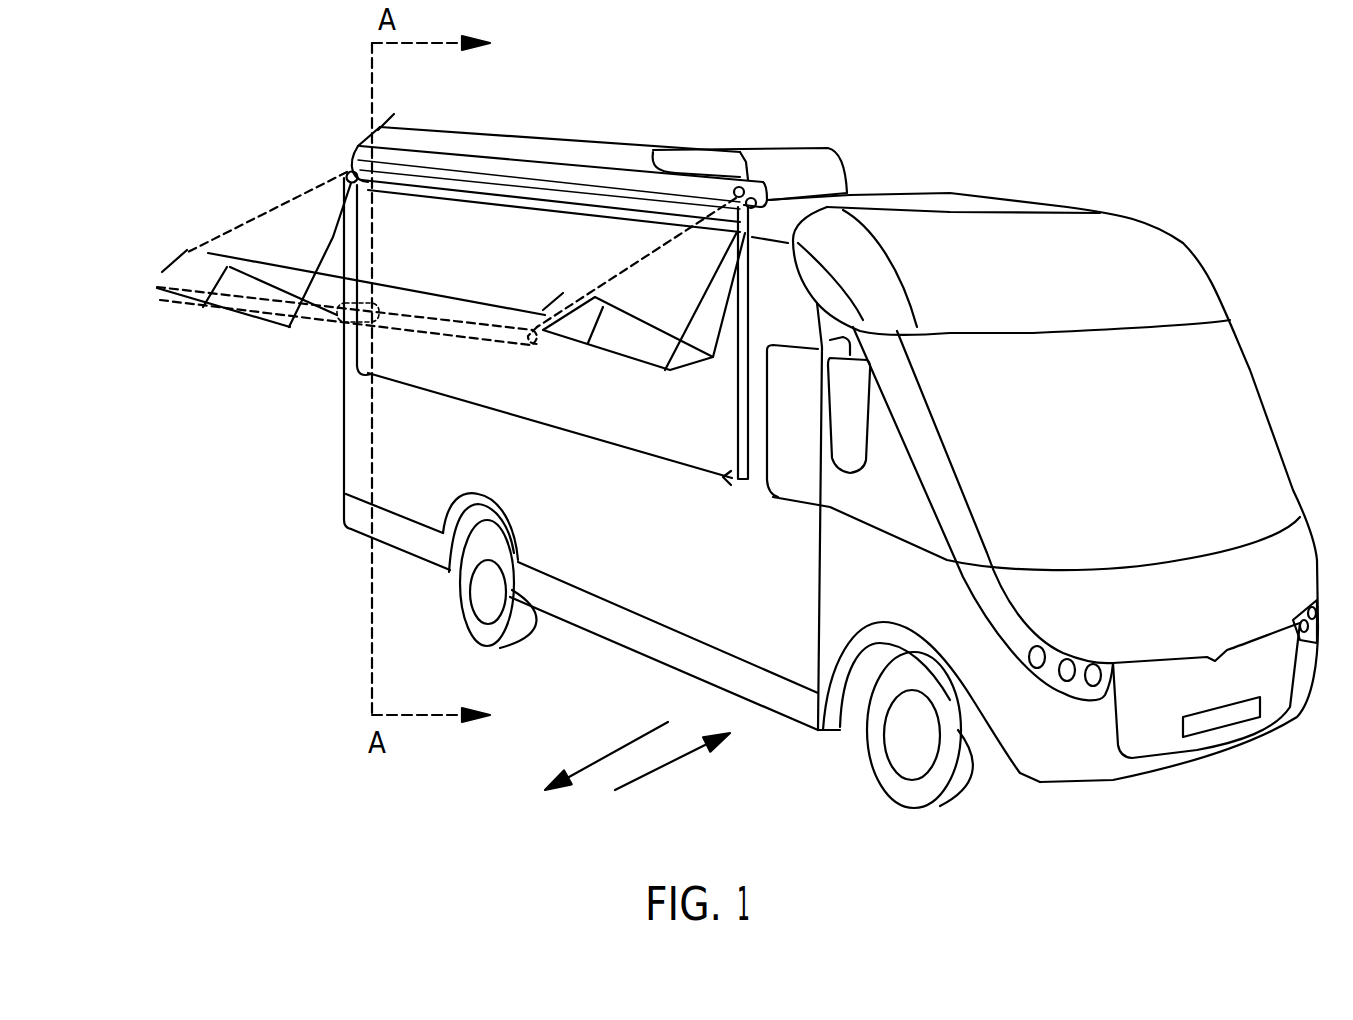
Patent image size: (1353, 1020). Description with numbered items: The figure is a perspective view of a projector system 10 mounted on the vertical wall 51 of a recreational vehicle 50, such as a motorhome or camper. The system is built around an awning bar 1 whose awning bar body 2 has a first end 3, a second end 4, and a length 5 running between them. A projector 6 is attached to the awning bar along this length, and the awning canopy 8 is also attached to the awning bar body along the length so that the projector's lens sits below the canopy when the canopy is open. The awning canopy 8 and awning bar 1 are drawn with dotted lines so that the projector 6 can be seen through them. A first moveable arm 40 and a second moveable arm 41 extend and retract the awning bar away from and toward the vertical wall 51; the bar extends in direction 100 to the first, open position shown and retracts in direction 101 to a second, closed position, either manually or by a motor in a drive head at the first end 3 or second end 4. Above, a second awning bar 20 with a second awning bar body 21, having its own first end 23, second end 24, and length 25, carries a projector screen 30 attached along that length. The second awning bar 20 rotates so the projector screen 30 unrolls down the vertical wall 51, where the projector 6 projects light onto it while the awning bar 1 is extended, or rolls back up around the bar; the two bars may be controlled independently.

The awning bar 1 is at (222, 300).
The awning bar body 2 is at (278, 307).
The first end 3 is at (157, 288).
The second end 4 is at (545, 338).
The length 5 is at (487, 297).
The projector 6 is at (350, 325).
The awning canopy 8 is at (300, 198).
The projector system 10 is at (133, 203).
The second awning bar 20 is at (412, 187).
The second awning bar body 21 is at (469, 193).
The first end 23 is at (343, 178).
The second end 24 is at (746, 178).
The length 25 is at (583, 141).
The projector screen 30 is at (692, 457).
The first moveable arm 40 is at (313, 257).
The second moveable arm 41 is at (623, 357).
The recreational vehicle 50 is at (860, 198).
The vertical wall 51 is at (788, 667).
The direction 100 is at (617, 747).
The direction 101 is at (667, 767).